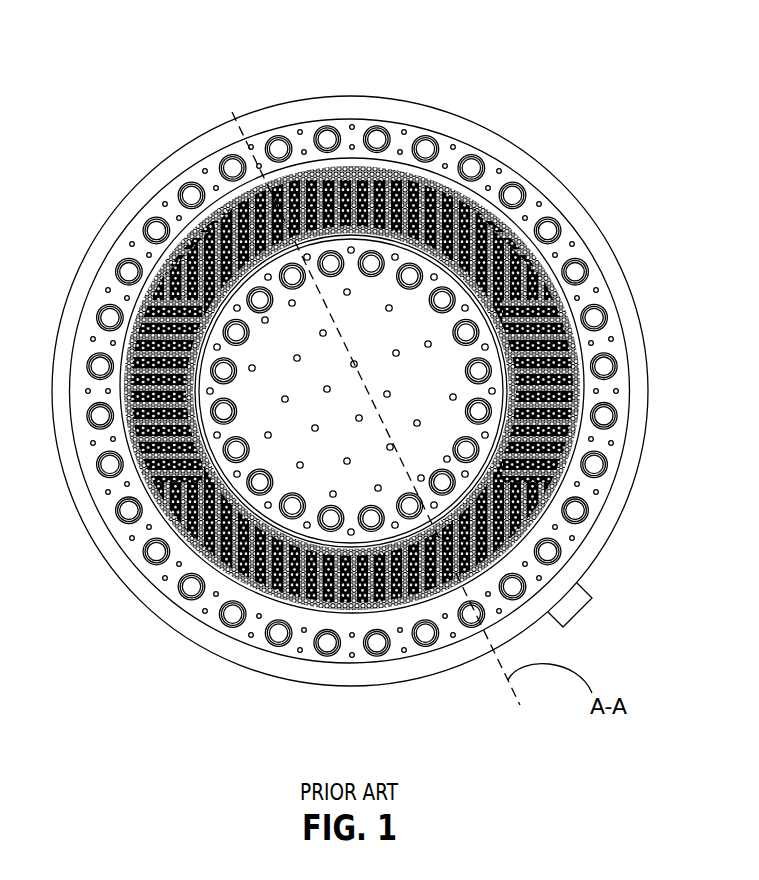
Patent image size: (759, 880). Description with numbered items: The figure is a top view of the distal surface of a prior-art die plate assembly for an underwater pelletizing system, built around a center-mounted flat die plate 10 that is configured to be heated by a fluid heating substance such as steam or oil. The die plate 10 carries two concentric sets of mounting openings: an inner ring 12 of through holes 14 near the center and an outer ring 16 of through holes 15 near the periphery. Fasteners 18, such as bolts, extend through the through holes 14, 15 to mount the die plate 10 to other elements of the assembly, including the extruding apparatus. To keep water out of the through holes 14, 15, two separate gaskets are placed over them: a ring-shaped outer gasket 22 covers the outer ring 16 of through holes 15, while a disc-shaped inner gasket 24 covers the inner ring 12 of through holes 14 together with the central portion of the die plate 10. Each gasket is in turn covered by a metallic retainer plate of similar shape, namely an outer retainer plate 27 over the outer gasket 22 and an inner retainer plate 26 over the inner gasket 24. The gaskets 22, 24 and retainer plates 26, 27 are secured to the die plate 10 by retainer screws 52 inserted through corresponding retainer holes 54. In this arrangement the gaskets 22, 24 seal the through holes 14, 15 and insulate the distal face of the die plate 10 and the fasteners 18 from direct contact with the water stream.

The die plate 10 is at (397, 84).
The inner ring 12 is at (446, 348).
The through holes 14 is at (370, 507).
The through holes 15 is at (472, 150).
The outer ring 16 is at (532, 178).
The fasteners 18 is at (578, 268).
The outer gasket 22 is at (628, 382).
The inner gasket 24 is at (492, 435).
The inner retainer plate 26 is at (379, 396).
The outer retainer plate 27 is at (580, 530).
The retainer screws 52 is at (396, 350).
The retainer holes 54 is at (296, 361).